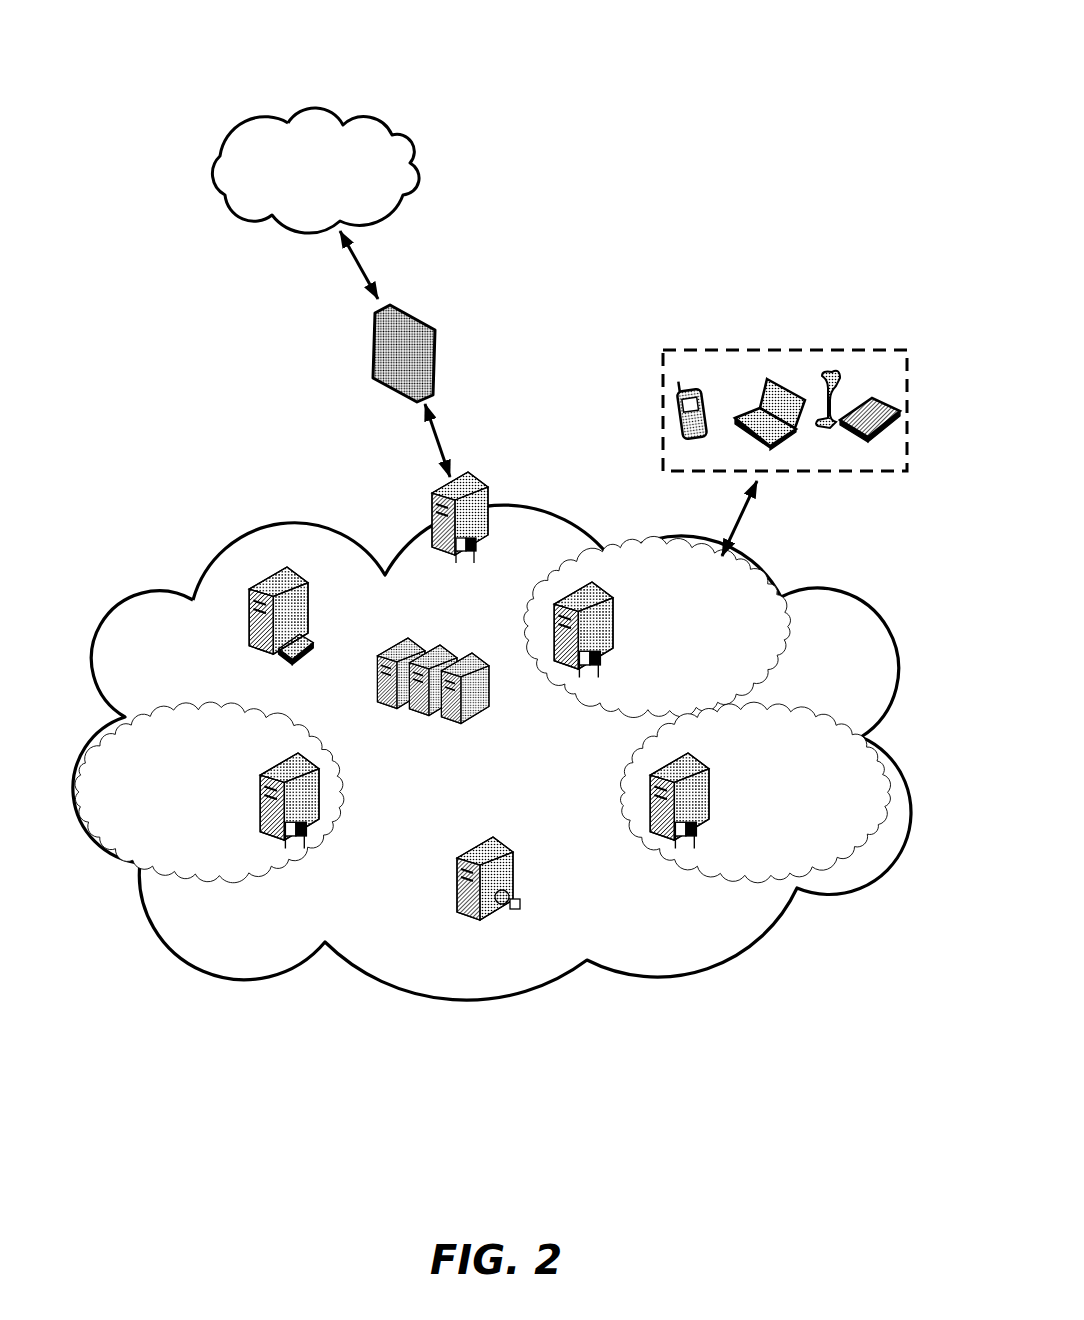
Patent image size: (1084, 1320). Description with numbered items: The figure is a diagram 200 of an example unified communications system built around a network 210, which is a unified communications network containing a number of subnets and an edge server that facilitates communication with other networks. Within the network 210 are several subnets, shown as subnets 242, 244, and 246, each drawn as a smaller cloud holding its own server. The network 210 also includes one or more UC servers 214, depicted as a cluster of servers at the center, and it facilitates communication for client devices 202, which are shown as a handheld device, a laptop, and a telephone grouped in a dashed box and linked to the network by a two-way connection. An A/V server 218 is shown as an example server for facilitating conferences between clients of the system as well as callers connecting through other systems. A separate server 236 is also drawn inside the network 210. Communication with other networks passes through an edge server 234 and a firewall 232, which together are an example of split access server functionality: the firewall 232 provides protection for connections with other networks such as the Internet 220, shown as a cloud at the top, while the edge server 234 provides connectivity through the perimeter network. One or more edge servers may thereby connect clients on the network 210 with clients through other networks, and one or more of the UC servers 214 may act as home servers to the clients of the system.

The diagram 200 is at (752, 75).
The client devices 202 is at (720, 346).
The network 210 is at (432, 1013).
The UC servers 214 is at (447, 634).
The A/V server 218 is at (490, 909).
The Internet 220 is at (268, 110).
The firewall 232 is at (367, 322).
The edge server 234 is at (440, 483).
The server 236 is at (262, 572).
The subnet 242 is at (657, 532).
The subnet 244 is at (232, 700).
The subnet 246 is at (682, 864).